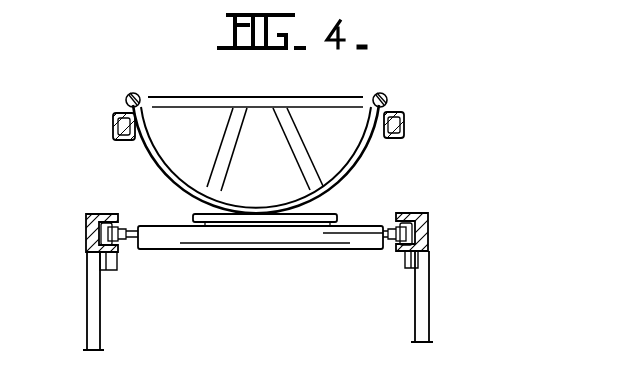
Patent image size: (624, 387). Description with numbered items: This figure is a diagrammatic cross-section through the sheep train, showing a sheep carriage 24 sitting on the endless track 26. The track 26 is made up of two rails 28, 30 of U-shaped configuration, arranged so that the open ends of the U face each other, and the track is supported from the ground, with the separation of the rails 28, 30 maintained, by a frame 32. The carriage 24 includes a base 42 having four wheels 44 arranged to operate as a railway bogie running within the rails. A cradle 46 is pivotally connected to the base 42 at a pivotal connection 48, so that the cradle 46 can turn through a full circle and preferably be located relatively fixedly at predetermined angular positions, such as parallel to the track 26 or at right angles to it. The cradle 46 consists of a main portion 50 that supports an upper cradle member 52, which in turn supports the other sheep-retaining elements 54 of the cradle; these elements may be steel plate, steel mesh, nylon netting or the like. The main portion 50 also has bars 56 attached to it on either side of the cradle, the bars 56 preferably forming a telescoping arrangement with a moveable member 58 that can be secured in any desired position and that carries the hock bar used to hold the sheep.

The sheep carriage 24 is at (409, 85).
The endless track 26 is at (113, 197).
The rail 28 is at (112, 267).
The rail 30 is at (430, 268).
The frame 32 is at (97, 335).
The base 42 is at (306, 240).
The wheels 44 is at (122, 243).
The cradle 46 is at (134, 93).
The pivotal connection 48 is at (261, 226).
The main portion 50 is at (209, 222).
The upper cradle member 52 is at (195, 103).
The sheep-retaining elements 54 is at (303, 148).
The bars 56 is at (113, 120).
The moveable member 58 is at (118, 115).